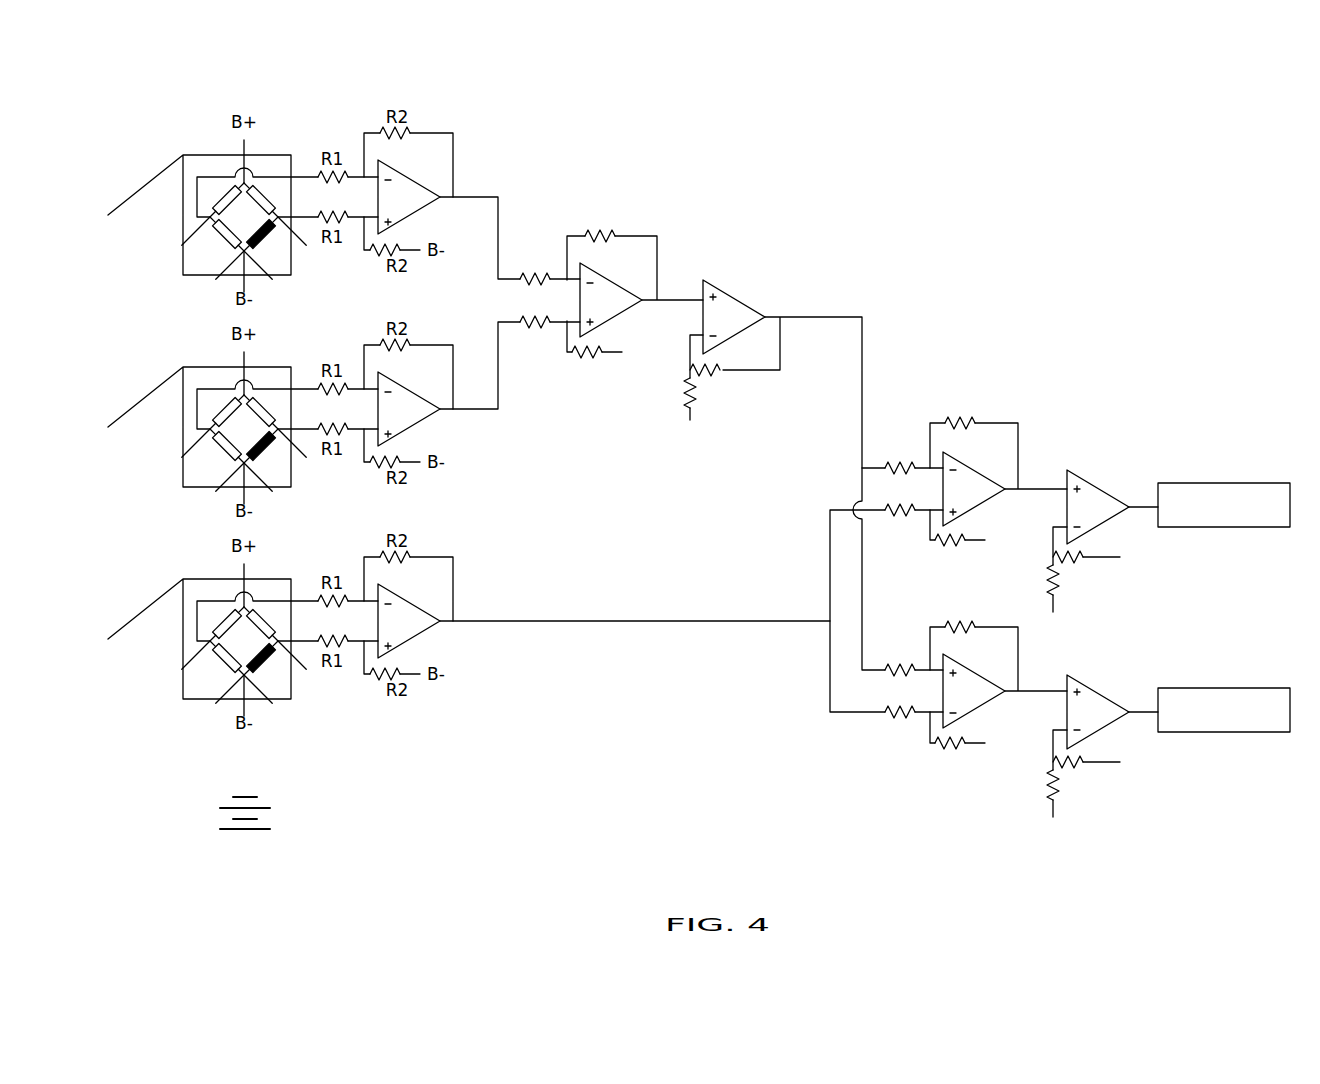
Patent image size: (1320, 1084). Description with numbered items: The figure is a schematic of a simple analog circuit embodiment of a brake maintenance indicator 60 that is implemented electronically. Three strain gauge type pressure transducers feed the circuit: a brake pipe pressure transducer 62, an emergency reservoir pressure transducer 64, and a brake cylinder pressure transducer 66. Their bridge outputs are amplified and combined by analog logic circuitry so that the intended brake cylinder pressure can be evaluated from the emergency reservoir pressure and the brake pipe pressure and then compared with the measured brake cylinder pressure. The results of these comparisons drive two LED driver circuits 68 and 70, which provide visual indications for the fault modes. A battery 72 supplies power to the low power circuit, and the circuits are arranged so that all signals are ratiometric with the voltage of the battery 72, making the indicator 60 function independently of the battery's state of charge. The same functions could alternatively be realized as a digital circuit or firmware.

The brake maintenance indicator 60 is at (885, 153).
The brake pipe pressure transducer 62 is at (160, 172).
The emergency reservoir pressure transducer 64 is at (160, 384).
The brake cylinder pressure transducer 66 is at (160, 596).
The LED driver circuit 68 is at (1265, 483).
The LED driver circuit 70 is at (1265, 688).
The battery 72 is at (220, 829).